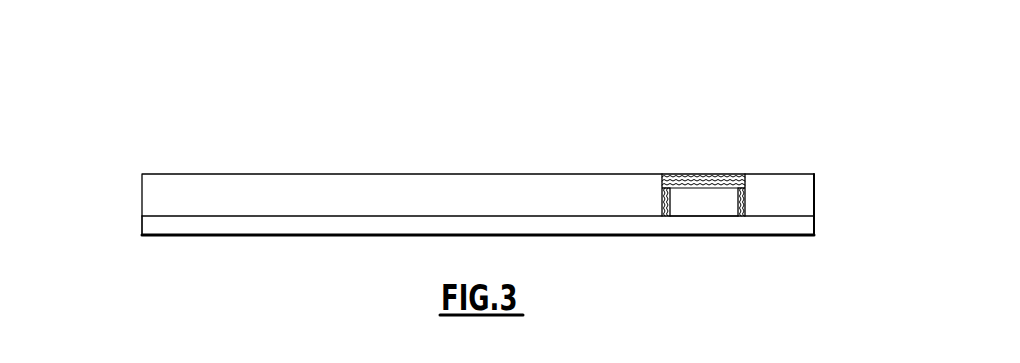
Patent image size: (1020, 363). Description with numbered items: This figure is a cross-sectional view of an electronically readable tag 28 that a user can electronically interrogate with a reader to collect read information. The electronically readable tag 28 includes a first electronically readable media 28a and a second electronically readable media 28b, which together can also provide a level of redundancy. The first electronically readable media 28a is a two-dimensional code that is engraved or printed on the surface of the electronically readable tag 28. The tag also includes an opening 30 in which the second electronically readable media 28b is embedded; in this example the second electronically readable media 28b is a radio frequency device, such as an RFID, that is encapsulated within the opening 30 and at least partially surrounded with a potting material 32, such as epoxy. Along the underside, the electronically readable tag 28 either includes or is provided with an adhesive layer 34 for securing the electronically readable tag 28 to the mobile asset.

The electronically readable tag 28 is at (128, 180).
The first electronically readable media 28a is at (556, 172).
The second electronically readable media 28b is at (726, 205).
The opening 30 is at (674, 173).
The potting material 32 is at (718, 173).
The adhesive layer 34 is at (153, 228).